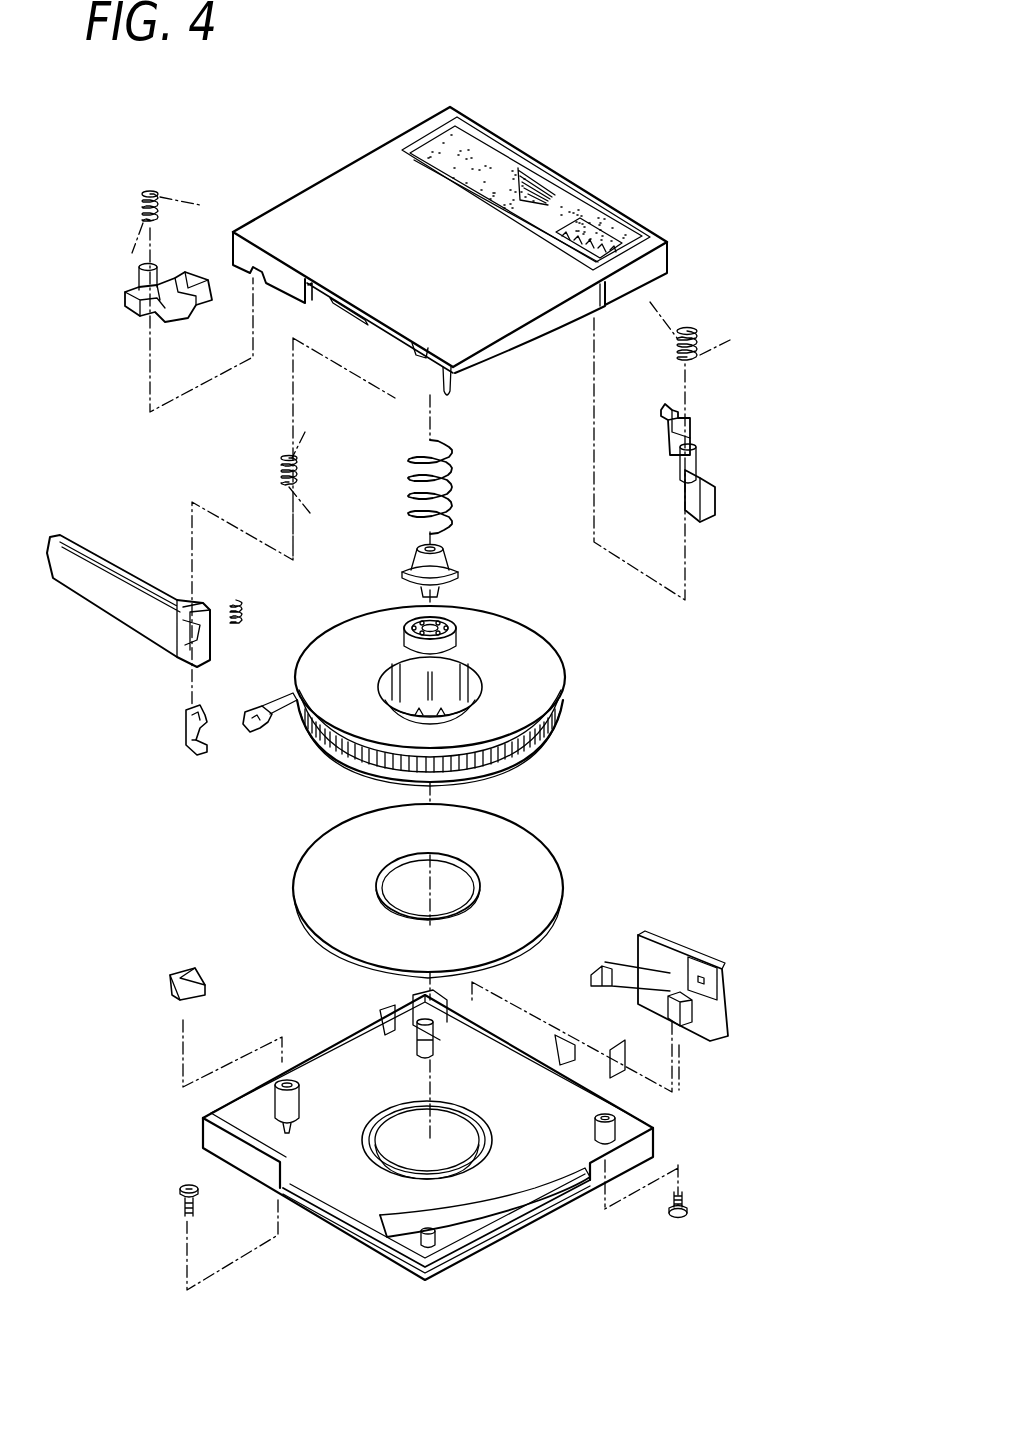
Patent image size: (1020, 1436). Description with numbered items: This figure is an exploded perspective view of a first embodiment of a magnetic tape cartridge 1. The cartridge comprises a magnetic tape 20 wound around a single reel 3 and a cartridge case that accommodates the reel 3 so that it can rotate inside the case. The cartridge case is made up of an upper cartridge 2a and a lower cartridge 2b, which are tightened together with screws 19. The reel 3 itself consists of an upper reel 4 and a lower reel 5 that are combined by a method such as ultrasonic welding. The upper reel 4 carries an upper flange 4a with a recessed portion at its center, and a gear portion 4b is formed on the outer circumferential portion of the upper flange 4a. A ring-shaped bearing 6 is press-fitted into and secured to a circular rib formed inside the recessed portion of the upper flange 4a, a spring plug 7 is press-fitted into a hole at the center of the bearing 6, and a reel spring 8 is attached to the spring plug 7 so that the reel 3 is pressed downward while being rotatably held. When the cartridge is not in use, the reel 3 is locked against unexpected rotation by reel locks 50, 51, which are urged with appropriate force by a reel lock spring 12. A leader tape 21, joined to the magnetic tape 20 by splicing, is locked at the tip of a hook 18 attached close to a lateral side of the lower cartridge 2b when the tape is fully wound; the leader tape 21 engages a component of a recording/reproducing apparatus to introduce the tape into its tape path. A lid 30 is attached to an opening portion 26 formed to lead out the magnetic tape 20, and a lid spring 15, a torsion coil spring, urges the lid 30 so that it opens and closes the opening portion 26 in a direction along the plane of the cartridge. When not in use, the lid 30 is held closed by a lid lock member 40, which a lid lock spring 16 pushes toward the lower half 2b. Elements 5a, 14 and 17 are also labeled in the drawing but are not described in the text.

The magnetic tape cartridge 1 is at (452, 255).
The upper cartridge 2a is at (450, 255).
The lower cartridge 2b is at (533, 1152).
The reel 3 is at (441, 767).
The upper reel 4 is at (446, 686).
The upper flange 4a is at (533, 700).
The gear portion 4b is at (552, 728).
The lower reel 5 is at (444, 891).
The surface of reel plate 5a is at (535, 867).
The ring-shaped bearing 6 is at (400, 636).
The spring plug 7 is at (412, 568).
The reel spring 8 is at (450, 497).
The reel lock spring 12 is at (158, 186).
The pin 14 is at (455, 391).
The lid spring 15 is at (305, 470).
The lid lock spring 16 is at (214, 626).
The lever 17 is at (706, 1042).
The hook 18 is at (196, 972).
The screws 19 is at (178, 1200).
The magnetic tape 20 is at (372, 783).
The leader tape 21 is at (272, 732).
The opening portion 26 is at (350, 315).
The lid 30 is at (152, 622).
The lid lock member 40 is at (184, 736).
The reel lock 50 is at (201, 303).
The reel lock 51 is at (710, 471).